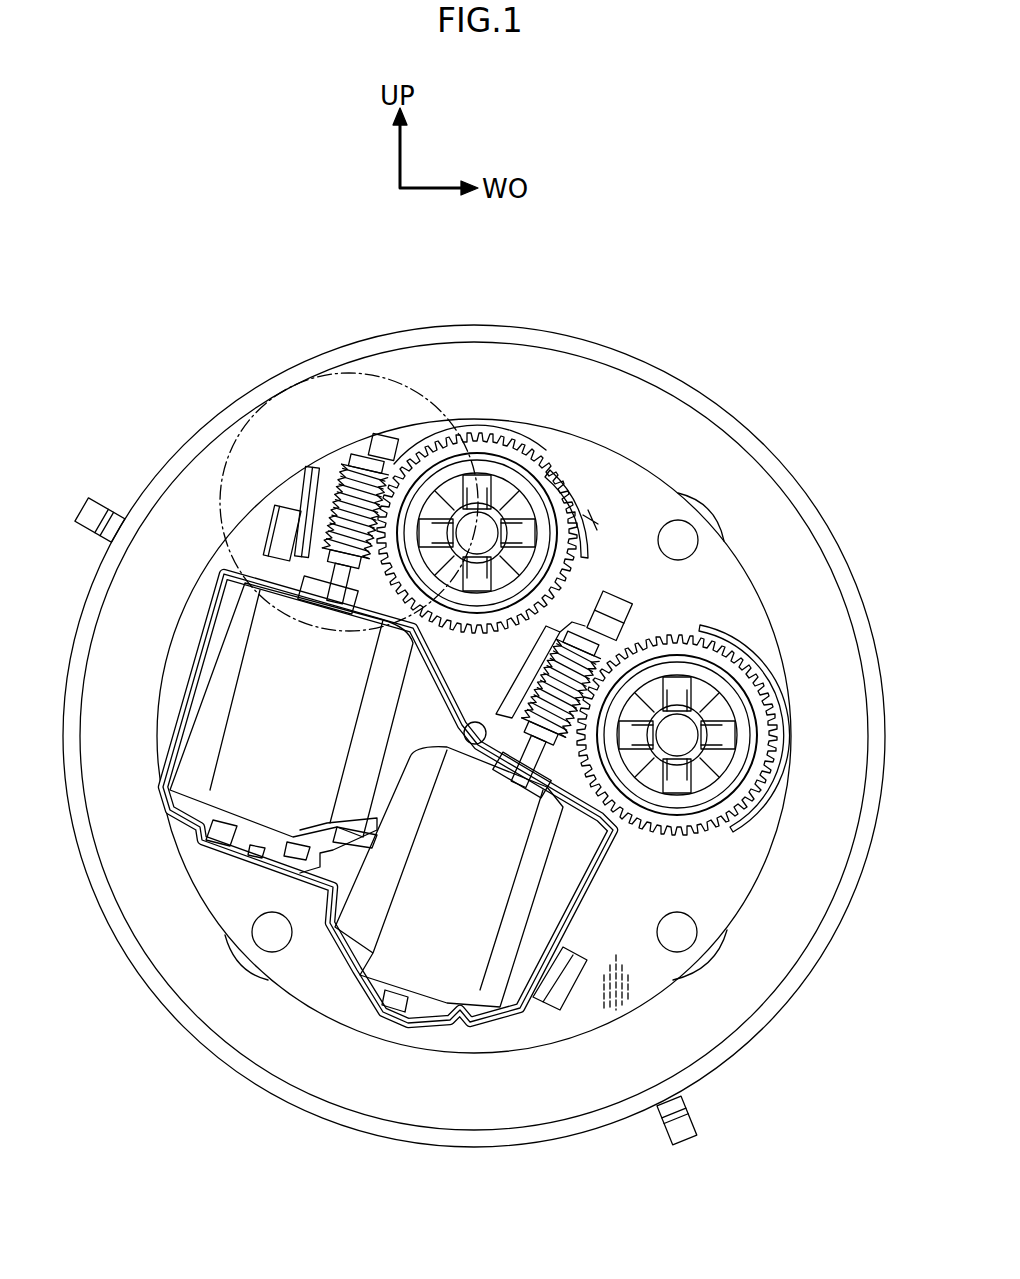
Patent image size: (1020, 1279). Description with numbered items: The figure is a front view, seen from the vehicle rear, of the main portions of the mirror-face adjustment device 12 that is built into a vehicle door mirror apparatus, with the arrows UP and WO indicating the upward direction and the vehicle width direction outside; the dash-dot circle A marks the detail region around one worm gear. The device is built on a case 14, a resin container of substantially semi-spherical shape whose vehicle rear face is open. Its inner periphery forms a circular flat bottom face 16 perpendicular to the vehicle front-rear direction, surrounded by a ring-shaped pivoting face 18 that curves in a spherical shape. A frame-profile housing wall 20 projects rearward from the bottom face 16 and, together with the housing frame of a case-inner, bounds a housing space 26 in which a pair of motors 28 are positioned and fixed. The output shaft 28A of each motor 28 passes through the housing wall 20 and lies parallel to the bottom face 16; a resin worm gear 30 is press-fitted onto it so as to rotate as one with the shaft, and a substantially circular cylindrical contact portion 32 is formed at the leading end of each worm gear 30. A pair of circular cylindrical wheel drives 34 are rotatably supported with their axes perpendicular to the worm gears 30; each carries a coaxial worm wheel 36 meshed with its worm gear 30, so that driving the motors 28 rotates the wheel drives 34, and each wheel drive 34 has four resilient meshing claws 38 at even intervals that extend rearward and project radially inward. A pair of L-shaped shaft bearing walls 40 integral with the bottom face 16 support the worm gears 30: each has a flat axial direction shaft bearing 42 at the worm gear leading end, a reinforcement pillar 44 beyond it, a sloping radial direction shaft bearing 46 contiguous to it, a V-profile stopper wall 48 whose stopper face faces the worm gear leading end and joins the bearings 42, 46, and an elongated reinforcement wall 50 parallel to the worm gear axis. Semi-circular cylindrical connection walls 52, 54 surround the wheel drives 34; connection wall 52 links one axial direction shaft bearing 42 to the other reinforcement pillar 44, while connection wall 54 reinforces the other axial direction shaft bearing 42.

The mirror-face adjustment device 12 is at (187, 312).
The case 14 is at (760, 441).
The bottom face 16 is at (647, 987).
The pivoting face 18 is at (797, 532).
The housing wall 20 is at (353, 995).
The housing space 26 is at (303, 940).
The motors 28 is at (165, 785).
The output shaft 28A is at (327, 592).
The worm gear 30 is at (307, 530).
The contact portion 32 is at (358, 462).
The wheel drives 34 is at (573, 465).
The worm wheel 36 is at (585, 500).
The meshing claws 38 is at (447, 605).
The shaft bearing walls 40 is at (305, 491).
The axial direction shaft bearings 42 is at (372, 456).
The reinforcement pillars 44 is at (395, 445).
The radial direction shaft bearings 46 is at (313, 462).
The stopper walls 48 is at (347, 476).
The reinforcement walls 50 is at (310, 472).
The connection wall 52 is at (590, 520).
The connection wall 54 is at (727, 632).
The detail region A is at (372, 372).